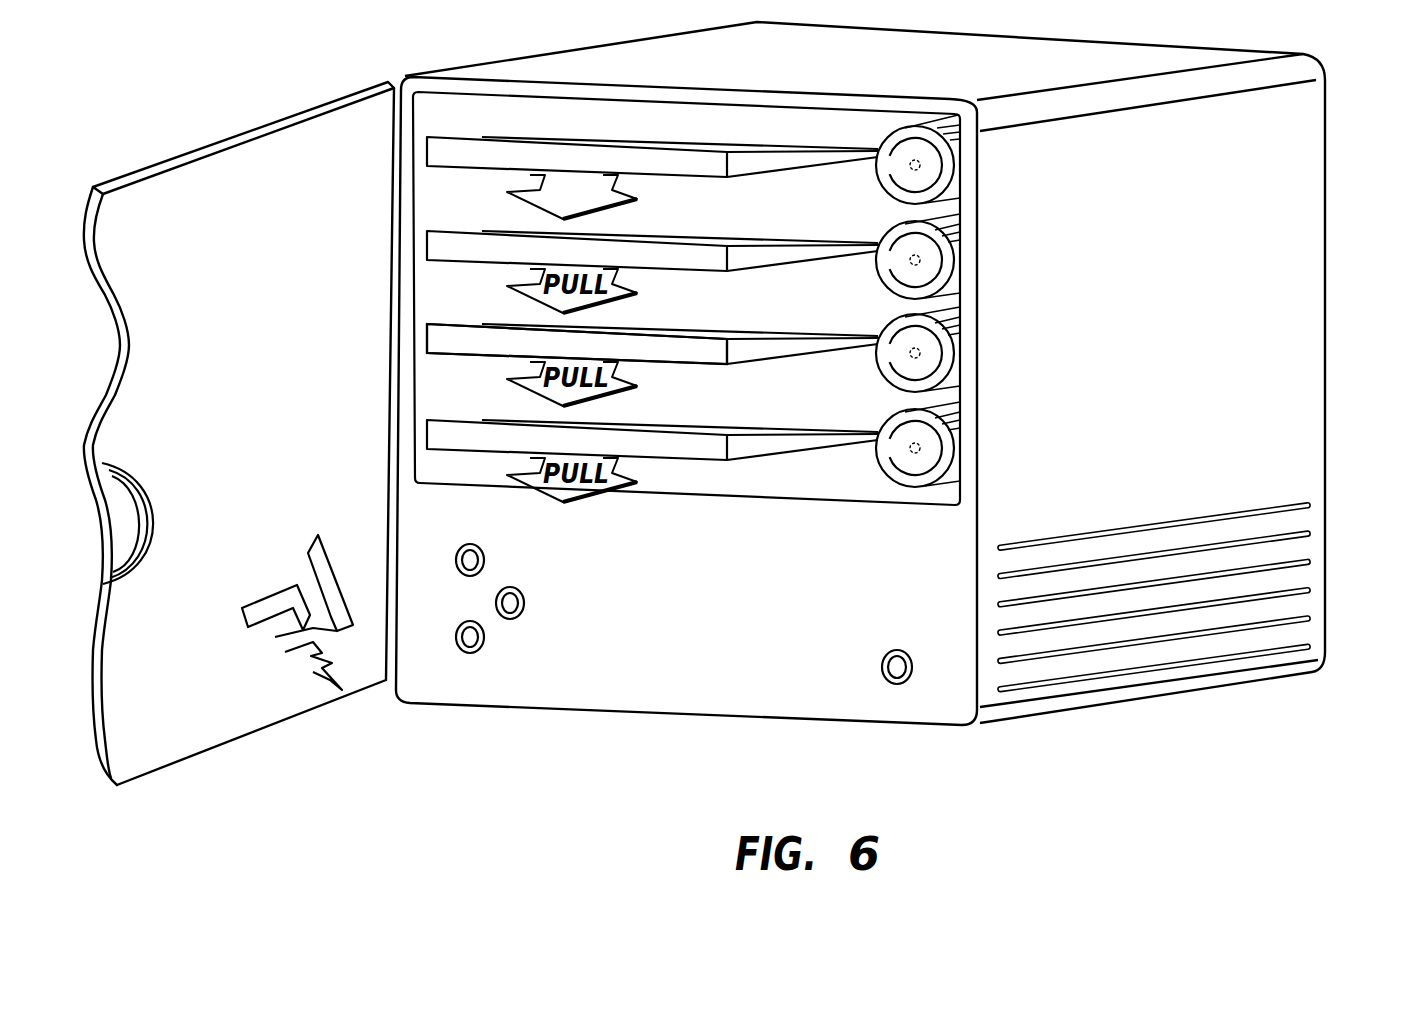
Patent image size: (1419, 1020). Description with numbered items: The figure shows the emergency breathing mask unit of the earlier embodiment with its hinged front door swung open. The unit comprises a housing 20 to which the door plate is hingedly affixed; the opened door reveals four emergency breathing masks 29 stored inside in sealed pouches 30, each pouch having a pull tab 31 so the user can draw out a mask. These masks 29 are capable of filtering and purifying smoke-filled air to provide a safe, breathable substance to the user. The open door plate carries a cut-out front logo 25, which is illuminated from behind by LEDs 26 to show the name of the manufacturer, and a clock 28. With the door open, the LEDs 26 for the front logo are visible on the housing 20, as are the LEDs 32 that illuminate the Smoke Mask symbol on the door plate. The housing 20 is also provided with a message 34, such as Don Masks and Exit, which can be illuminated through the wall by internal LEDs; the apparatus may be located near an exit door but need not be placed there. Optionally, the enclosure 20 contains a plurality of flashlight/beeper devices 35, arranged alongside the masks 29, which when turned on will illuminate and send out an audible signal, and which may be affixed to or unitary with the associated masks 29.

The housing 20 is at (1307, 230).
The cut-out front logo 25 is at (318, 532).
The LEDs 26 is at (456, 654).
The clock 28 is at (122, 468).
The emergency breathing masks 29 is at (552, 327).
The sealed pouches 30 is at (708, 350).
The pull tabs 31 is at (637, 199).
The LEDs 32 is at (880, 687).
The message 34 is at (661, 672).
The flashlight/beeper devices 35 is at (953, 448).